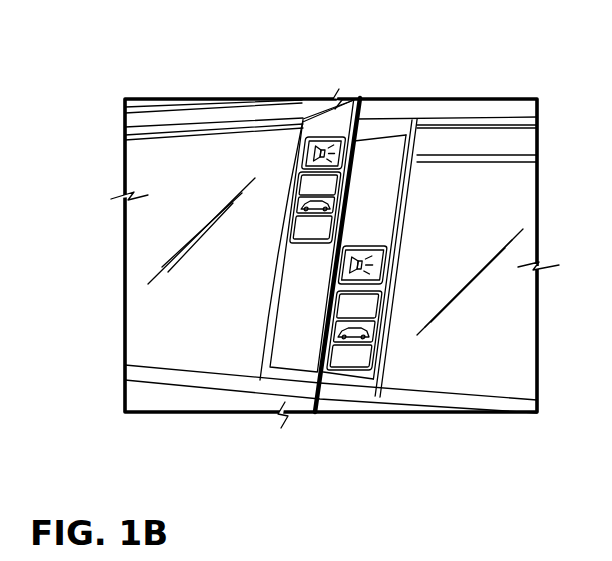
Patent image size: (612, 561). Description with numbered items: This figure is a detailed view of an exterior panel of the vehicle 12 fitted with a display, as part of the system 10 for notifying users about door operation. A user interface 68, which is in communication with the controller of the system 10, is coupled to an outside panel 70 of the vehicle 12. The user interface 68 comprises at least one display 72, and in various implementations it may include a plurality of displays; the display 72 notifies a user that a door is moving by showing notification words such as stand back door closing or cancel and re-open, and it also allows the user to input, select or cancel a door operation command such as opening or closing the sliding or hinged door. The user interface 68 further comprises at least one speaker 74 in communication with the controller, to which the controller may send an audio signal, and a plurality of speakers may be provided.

The system 10 is at (108, 259).
The vehicle 12 is at (140, 99).
The user interface 68 is at (367, 226).
The outside panel 70 is at (380, 133).
The display 72 is at (293, 240).
The speaker 74 is at (305, 145).